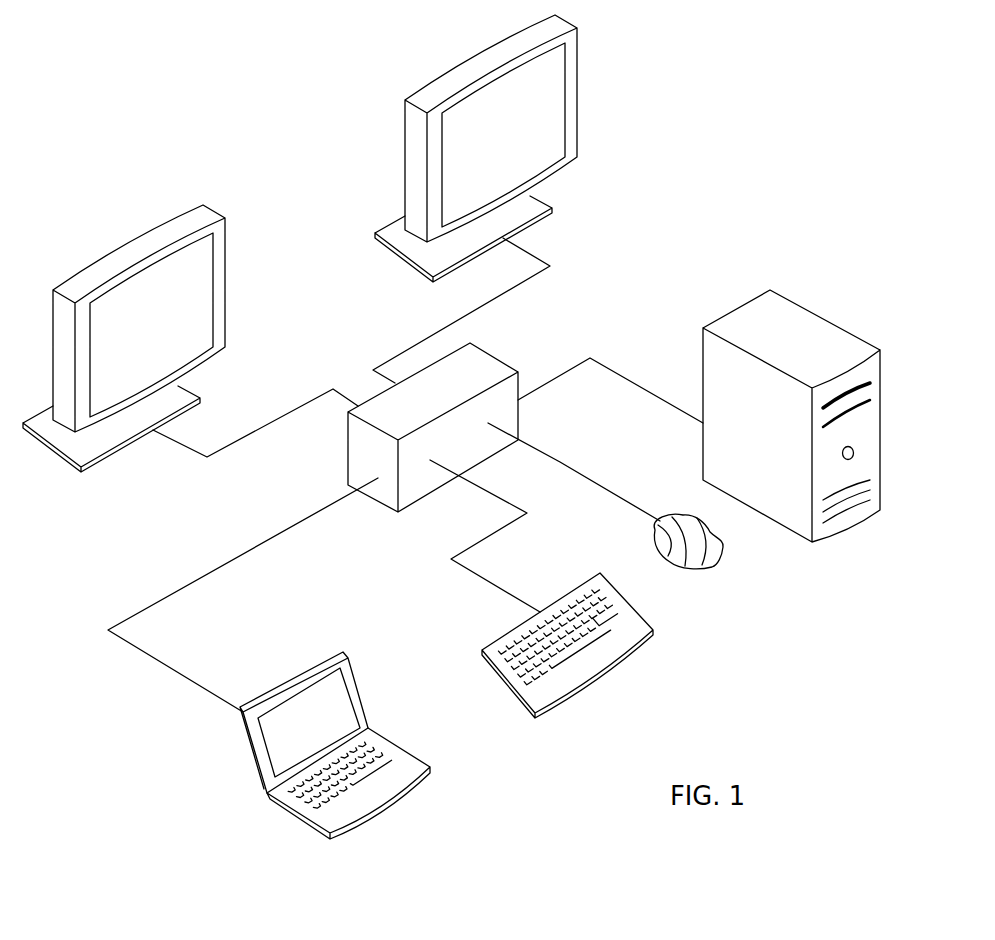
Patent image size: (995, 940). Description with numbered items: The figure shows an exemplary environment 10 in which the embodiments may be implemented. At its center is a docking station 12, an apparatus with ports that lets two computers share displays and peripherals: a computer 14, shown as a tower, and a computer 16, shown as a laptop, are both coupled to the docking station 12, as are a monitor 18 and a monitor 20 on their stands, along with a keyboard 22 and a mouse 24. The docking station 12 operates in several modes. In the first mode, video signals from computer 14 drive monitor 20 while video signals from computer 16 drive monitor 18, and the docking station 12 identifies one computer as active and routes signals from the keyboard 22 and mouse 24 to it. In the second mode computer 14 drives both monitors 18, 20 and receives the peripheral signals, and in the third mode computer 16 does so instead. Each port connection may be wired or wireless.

The environment 10 is at (277, 150).
The docking station 12 is at (365, 440).
The computer 14 is at (757, 315).
The computer 16 is at (340, 693).
The monitor 18 is at (108, 260).
The monitor 20 is at (463, 68).
The keyboard 22 is at (587, 590).
The mouse 24 is at (703, 555).